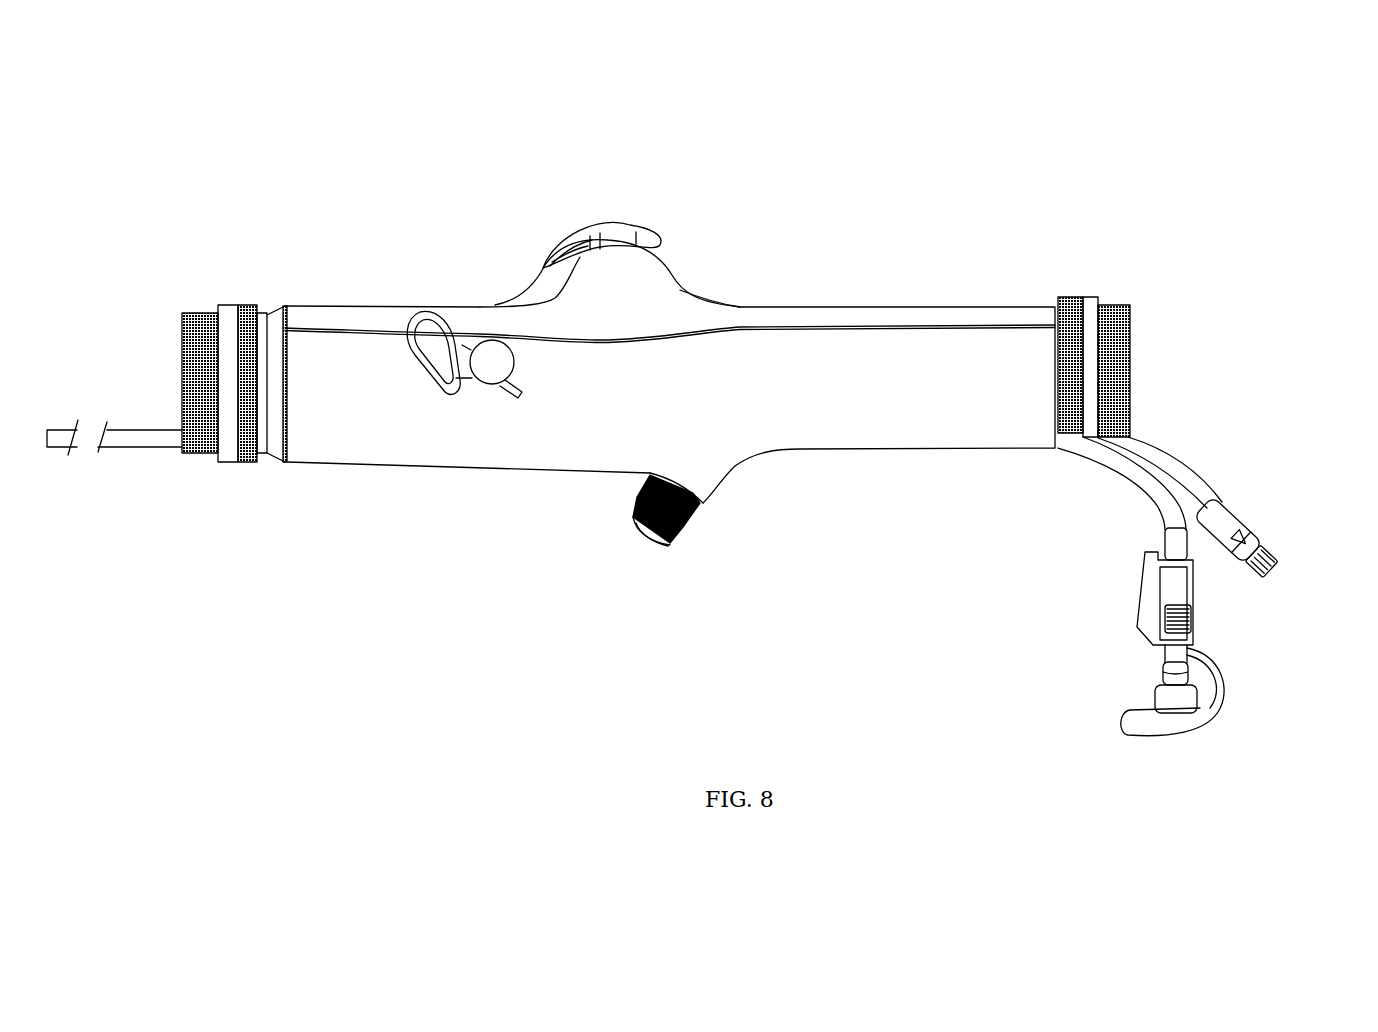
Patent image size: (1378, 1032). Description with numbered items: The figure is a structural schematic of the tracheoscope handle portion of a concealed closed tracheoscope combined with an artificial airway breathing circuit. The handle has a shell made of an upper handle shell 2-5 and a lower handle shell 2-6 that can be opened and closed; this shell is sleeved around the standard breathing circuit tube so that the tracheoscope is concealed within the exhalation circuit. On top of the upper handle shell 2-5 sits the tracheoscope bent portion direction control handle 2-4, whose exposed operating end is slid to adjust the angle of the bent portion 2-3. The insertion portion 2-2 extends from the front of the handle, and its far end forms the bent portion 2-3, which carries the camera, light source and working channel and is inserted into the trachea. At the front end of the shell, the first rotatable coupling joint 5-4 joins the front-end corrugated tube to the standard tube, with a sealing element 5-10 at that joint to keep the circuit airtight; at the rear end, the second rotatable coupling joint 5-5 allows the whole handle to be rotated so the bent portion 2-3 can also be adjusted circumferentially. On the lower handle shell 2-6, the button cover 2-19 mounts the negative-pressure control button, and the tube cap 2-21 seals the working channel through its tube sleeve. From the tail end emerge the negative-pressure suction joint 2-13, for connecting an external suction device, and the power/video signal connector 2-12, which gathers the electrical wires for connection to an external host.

The insertion portion 2-2 is at (132, 440).
The bent portion 2-3 is at (65, 443).
The tracheoscope bent portion direction control handle 2-4 is at (633, 232).
The upper handle shell 2-5 is at (695, 315).
The lower handle shell 2-6 is at (395, 427).
The power/video signal connector 2-12 is at (1173, 677).
The negative-pressure suction joint 2-13 is at (1248, 557).
The button cover 2-19 is at (672, 547).
The tube cap 2-21 is at (462, 370).
The first rotatable coupling joint 5-4 is at (230, 440).
The second rotatable coupling joint 5-5 is at (1120, 337).
The sealing element 5-10 is at (275, 427).